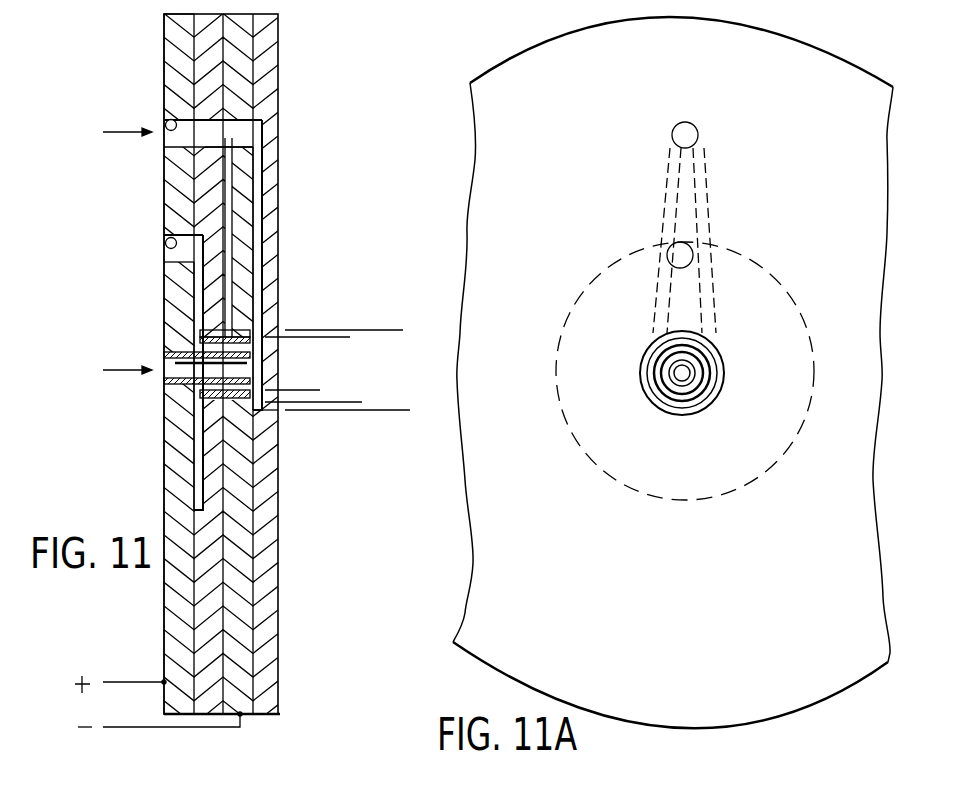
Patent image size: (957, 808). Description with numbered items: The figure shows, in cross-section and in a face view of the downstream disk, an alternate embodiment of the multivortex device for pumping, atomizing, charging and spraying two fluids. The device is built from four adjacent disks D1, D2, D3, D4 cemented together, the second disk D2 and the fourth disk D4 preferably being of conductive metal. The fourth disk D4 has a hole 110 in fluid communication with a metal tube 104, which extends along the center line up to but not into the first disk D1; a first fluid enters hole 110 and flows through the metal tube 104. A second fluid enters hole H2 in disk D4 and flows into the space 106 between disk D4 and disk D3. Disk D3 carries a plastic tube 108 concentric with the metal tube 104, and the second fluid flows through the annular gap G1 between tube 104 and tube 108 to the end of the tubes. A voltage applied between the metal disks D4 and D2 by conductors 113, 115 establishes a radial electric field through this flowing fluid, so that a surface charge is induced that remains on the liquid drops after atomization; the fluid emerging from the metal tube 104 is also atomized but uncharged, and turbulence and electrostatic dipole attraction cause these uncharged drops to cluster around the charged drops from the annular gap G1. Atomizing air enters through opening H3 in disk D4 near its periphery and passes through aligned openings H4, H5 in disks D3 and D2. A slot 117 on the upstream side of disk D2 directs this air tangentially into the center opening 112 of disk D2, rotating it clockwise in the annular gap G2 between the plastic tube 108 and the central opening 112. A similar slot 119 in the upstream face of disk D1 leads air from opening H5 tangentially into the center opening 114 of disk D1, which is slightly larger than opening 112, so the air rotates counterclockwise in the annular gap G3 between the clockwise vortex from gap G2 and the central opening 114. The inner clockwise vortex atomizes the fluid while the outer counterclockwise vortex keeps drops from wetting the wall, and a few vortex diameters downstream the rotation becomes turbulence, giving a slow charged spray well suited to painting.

In FIG. 11, the first disk D1 is at (270, 72).
In FIG. 11A, the first disk D1 is at (690, 618).
In FIG. 11, the second disk D2 is at (237, 35).
In FIG. 11, the third disk D3 is at (190, 43).
In FIG. 11, the fourth disk D4 is at (178, 73).
In FIG. 11, the hole H2 is at (166, 246).
In FIG. 11A, the hole H2 is at (668, 228).
In FIG. 11, the opening H3 is at (166, 122).
In FIG. 11A, the opening H3 is at (670, 132).
In FIG. 11, the opening H4 is at (205, 157).
In FIG. 11, the opening H5 is at (240, 127).
In FIG. 11, the annular gap G1 is at (170, 330).
In FIG. 11A, the annular gap G1 is at (707, 373).
In FIG. 11, the annular gap G2 is at (350, 337).
In FIG. 11A, the annular gap G2 is at (650, 378).
In FIG. 11, the annular gap G3 is at (387, 410).
In FIG. 11A, the annular gap G3 is at (714, 396).
In FIG. 11, the metal tube 104 is at (180, 404).
In FIG. 11, the space 106 is at (198, 282).
In FIG. 11A, the space 106 is at (605, 483).
In FIG. 11, the plastic tube 108 is at (205, 330).
In FIG. 11, the hole 110 is at (165, 368).
In FIG. 11, the center opening 112 is at (240, 328).
In FIG. 11, the conductor 113 is at (133, 682).
In FIG. 11, the center opening 114 is at (273, 425).
In FIG. 11, the conductor 115 is at (137, 727).
In FIG. 11, the slot 117 is at (226, 202).
In FIG. 11A, the slot 117 is at (667, 312).
In FIG. 11, the slot 119 is at (257, 242).
In FIG. 11A, the slot 119 is at (717, 322).